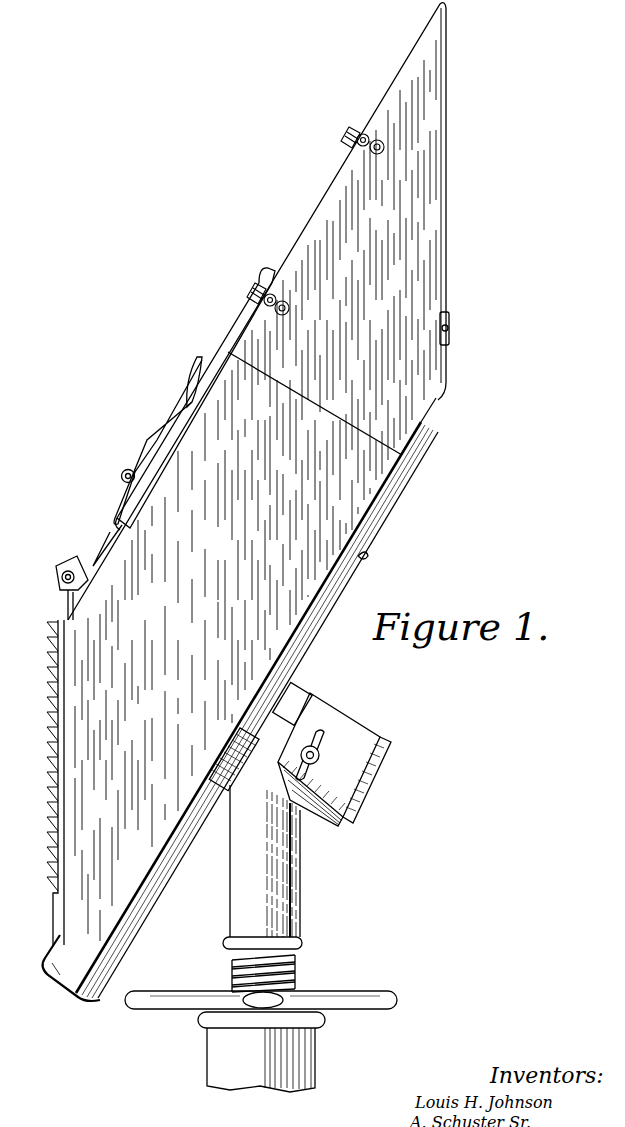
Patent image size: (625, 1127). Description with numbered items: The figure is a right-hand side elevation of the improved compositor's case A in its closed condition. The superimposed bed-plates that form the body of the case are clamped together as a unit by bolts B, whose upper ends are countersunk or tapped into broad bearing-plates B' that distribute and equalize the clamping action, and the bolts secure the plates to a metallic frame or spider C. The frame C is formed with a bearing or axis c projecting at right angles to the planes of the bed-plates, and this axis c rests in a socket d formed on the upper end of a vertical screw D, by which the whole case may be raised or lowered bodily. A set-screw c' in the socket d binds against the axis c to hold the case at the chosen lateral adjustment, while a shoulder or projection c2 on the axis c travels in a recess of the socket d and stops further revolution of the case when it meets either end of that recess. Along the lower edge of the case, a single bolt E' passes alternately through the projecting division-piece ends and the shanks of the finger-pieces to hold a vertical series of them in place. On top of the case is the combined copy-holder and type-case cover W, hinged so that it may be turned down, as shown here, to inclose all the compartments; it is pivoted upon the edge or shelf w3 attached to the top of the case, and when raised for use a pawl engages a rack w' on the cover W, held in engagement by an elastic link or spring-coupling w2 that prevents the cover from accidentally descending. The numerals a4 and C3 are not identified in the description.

The case A is at (255, 474).
The edge stop on board a4 is at (456, 239).
The bearing-plates B' is at (195, 399).
The elastic link or spring-coupling w2 is at (158, 440).
The bolt E' is at (106, 545).
The edge or shelf w3 is at (72, 560).
The metallic frame or spider C is at (240, 699).
The rounded corner of rail C3 is at (65, 988).
The bolts B is at (368, 557).
The shoulder or projection c2 is at (311, 690).
The set-screw c' is at (320, 751).
The socket d is at (261, 892).
The vertical screw D is at (271, 973).
The bearing or axis c is at (367, 780).
The rack w' is at (39, 756).
The combined copy-holder and type-case cover W is at (56, 906).